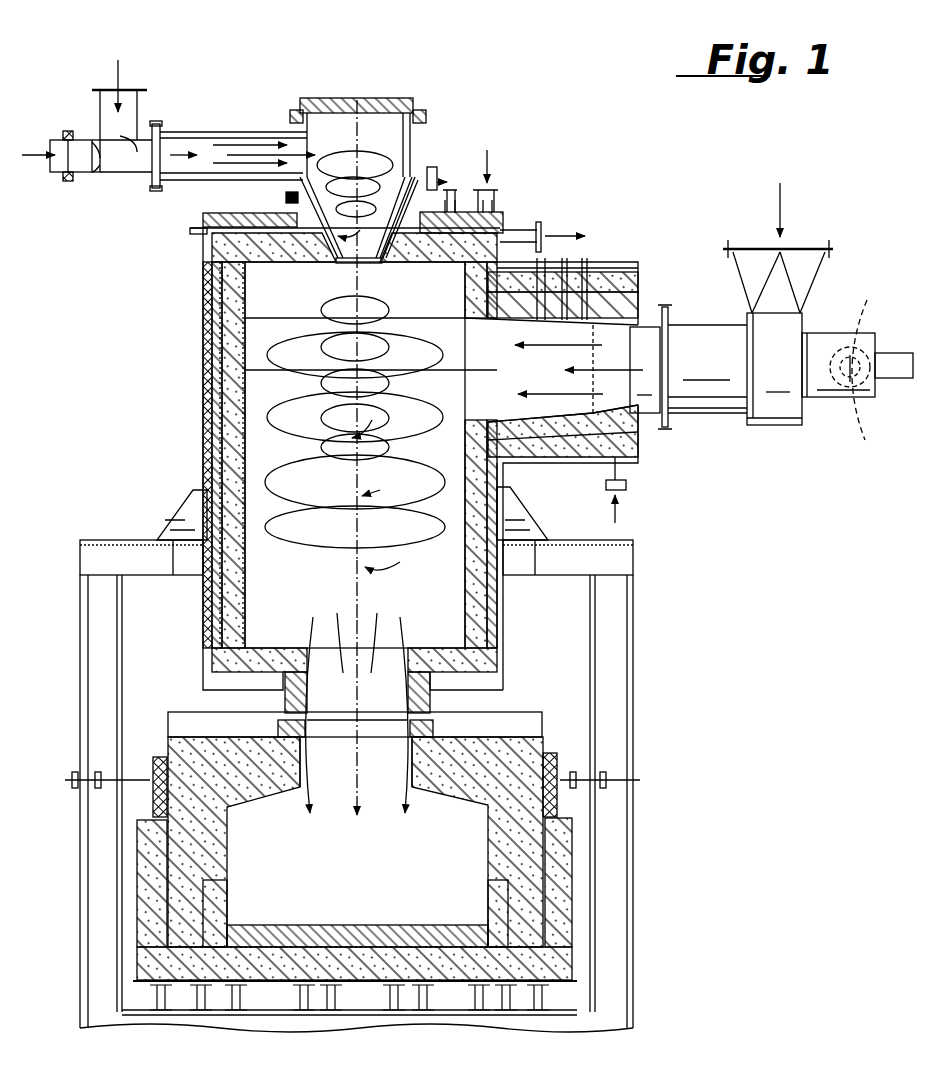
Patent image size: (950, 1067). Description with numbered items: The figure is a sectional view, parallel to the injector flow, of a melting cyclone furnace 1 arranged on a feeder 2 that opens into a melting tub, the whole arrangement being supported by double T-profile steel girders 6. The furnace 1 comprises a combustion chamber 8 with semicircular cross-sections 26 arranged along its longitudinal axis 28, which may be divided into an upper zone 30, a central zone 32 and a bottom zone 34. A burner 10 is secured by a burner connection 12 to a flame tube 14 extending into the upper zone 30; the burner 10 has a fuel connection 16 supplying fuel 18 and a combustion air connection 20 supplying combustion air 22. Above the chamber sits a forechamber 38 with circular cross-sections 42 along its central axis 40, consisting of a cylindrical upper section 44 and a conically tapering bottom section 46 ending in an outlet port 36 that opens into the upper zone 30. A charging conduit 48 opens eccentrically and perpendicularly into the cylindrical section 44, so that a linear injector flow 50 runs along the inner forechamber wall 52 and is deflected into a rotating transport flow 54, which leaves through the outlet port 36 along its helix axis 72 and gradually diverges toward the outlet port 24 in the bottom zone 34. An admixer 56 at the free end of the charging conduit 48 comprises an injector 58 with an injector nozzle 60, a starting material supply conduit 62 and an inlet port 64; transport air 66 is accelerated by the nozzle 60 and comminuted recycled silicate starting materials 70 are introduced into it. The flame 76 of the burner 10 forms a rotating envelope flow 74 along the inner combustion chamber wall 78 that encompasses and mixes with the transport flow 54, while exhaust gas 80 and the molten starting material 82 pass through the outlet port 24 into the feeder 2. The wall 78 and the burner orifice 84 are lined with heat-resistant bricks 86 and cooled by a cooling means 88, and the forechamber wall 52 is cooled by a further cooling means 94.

The melting cyclone furnace 1 is at (125, 410).
The feeder 2 is at (125, 890).
The double T-profile steel girders 6 is at (612, 880).
The combustion chamber 8 is at (262, 393).
The burner 10 is at (735, 418).
The burner connection 12 is at (668, 305).
The flame tube 14 is at (580, 452).
The fuel connection 16 is at (858, 340).
The fuel 18 is at (866, 436).
The combustion air connection 20 is at (808, 250).
The combustion air 22 is at (780, 183).
The outlet port 24 is at (343, 652).
The semicircular cross-sections 26 is at (255, 290).
The longitudinal axis 28 is at (330, 439).
The upper zone 30 is at (265, 310).
The central zone 32 is at (258, 453).
The bottom zone 34 is at (262, 612).
The outlet port of forechamber 36 is at (341, 266).
The forechamber 38 is at (326, 95).
The central axis 40 is at (358, 128).
The circular cross-sections 42 is at (286, 194).
The cylindrical upper section 44 is at (405, 123).
The conically tapering bottom section 46 is at (412, 255).
The charging conduit 48 is at (255, 135).
The linear injector flow 50 is at (242, 155).
The inner forechamber wall 52 is at (418, 140).
The rotating transport flow 54 is at (378, 155).
The admixer 56 is at (80, 103).
The injector 58 is at (78, 178).
The injector nozzle 60 is at (103, 174).
The starting material supply conduit 62 is at (133, 90).
The inlet port 64 is at (152, 180).
The transport air 66 is at (35, 150).
The recycled silicate starting materials 70 is at (117, 70).
The helix axis 72 is at (363, 277).
The rotating envelope flow 74 is at (306, 530).
The flame 76 is at (635, 430).
The inner combustion chamber wall 78 is at (250, 352).
The exhaust gas 80 is at (687, 347).
The molten starting material 82 is at (303, 797).
The burner orifice 84 is at (516, 435).
The heat-resistant bricks 86 is at (480, 620).
The cooling means 88 is at (208, 335).
The cooling means of forechamber 94 is at (413, 165).